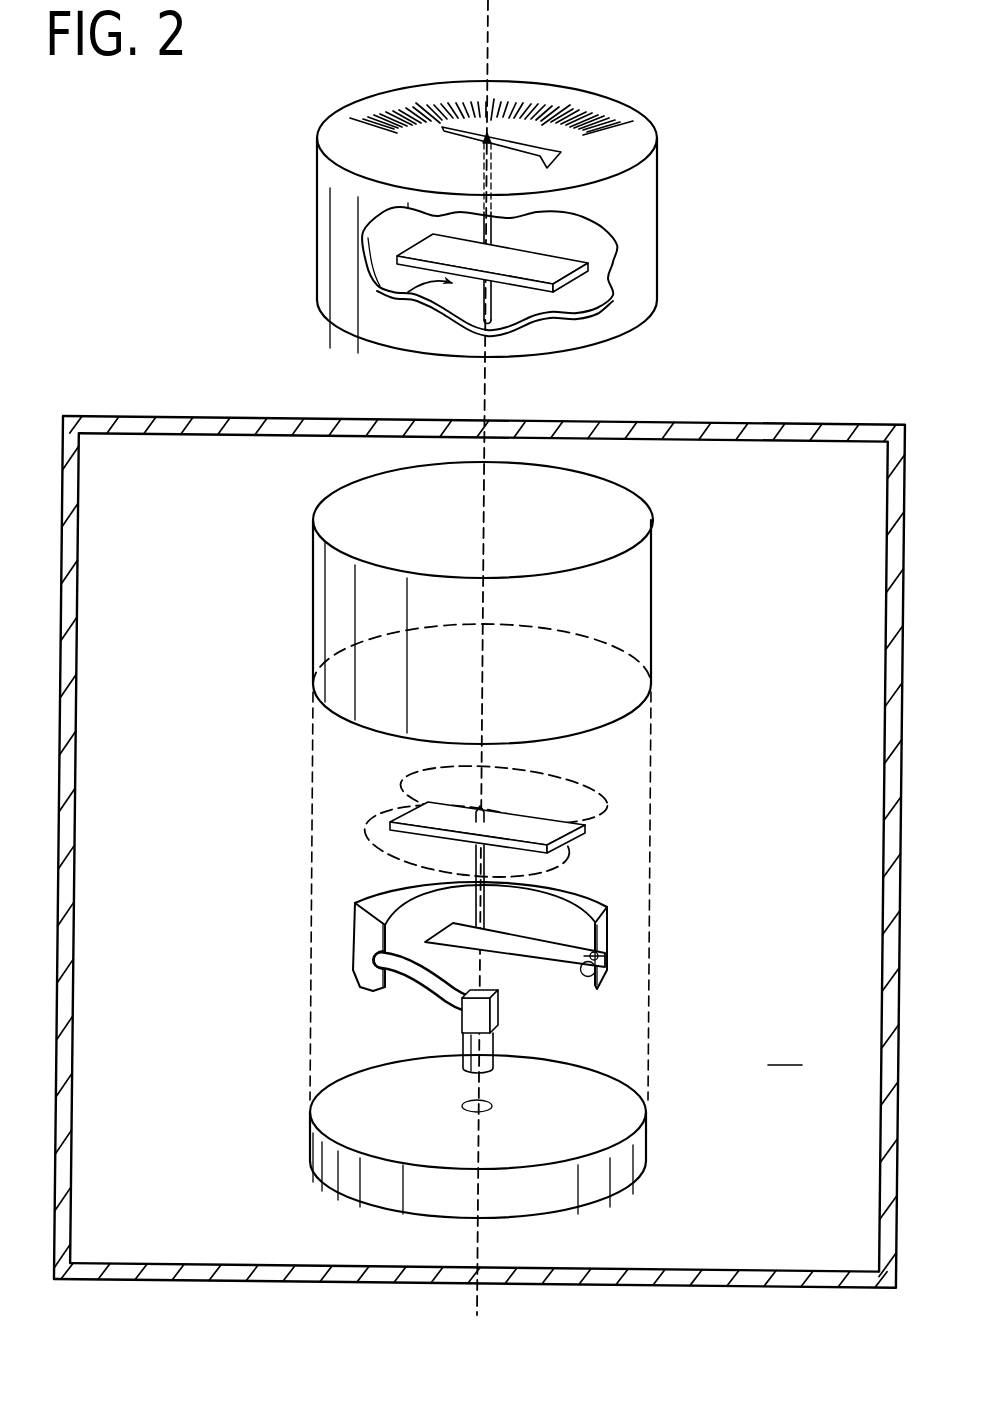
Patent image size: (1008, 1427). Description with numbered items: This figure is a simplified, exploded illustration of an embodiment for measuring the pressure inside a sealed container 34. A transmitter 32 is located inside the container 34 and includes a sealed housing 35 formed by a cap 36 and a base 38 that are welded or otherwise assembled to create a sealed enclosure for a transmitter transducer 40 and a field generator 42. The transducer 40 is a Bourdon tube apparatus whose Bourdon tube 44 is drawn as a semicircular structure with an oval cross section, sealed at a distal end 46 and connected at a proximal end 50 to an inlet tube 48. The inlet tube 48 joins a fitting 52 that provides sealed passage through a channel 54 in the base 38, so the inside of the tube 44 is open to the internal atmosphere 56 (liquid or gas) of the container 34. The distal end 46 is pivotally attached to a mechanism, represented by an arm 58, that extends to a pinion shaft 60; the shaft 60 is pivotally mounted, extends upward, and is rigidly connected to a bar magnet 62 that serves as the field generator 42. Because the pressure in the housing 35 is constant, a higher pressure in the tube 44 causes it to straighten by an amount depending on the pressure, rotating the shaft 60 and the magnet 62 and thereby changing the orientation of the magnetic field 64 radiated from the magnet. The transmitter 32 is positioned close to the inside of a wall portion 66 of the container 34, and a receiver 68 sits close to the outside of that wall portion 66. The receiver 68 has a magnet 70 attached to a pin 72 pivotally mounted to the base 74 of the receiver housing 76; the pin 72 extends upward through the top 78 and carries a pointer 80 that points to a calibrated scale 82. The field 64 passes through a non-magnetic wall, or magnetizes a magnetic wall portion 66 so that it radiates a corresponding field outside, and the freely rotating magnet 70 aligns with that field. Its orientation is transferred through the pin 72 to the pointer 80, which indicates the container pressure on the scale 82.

The transmitter 32 is at (472, 840).
The container 34 is at (488, 809).
The sealed housing 35 is at (433, 840).
The cap 36 is at (652, 618).
The base 38 is at (513, 1136).
The transmitter transducer 40 is at (516, 939).
The field generator 42 is at (519, 812).
The Bourdon tube 44 is at (356, 930).
The distal end 46 is at (597, 996).
The inlet tube 48 is at (430, 1020).
The proximal end 50 is at (383, 998).
The fitting 52 is at (510, 1007).
The channel 54 is at (490, 1102).
The internal atmosphere 56 is at (785, 1048).
The arm 58 is at (503, 938).
The pinion shaft 60 is at (474, 899).
The bar magnet 62 is at (507, 812).
The magnetic field 64 is at (400, 764).
The wall portion 66 is at (690, 410).
The receiver 68 is at (535, 208).
The magnet 70 is at (577, 278).
The pin 72 is at (511, 308).
The base 74 is at (408, 293).
The receiver housing 76 is at (316, 192).
The top 78 is at (504, 104).
The pointer 80 is at (530, 147).
The calibrated scale 82 is at (395, 68).